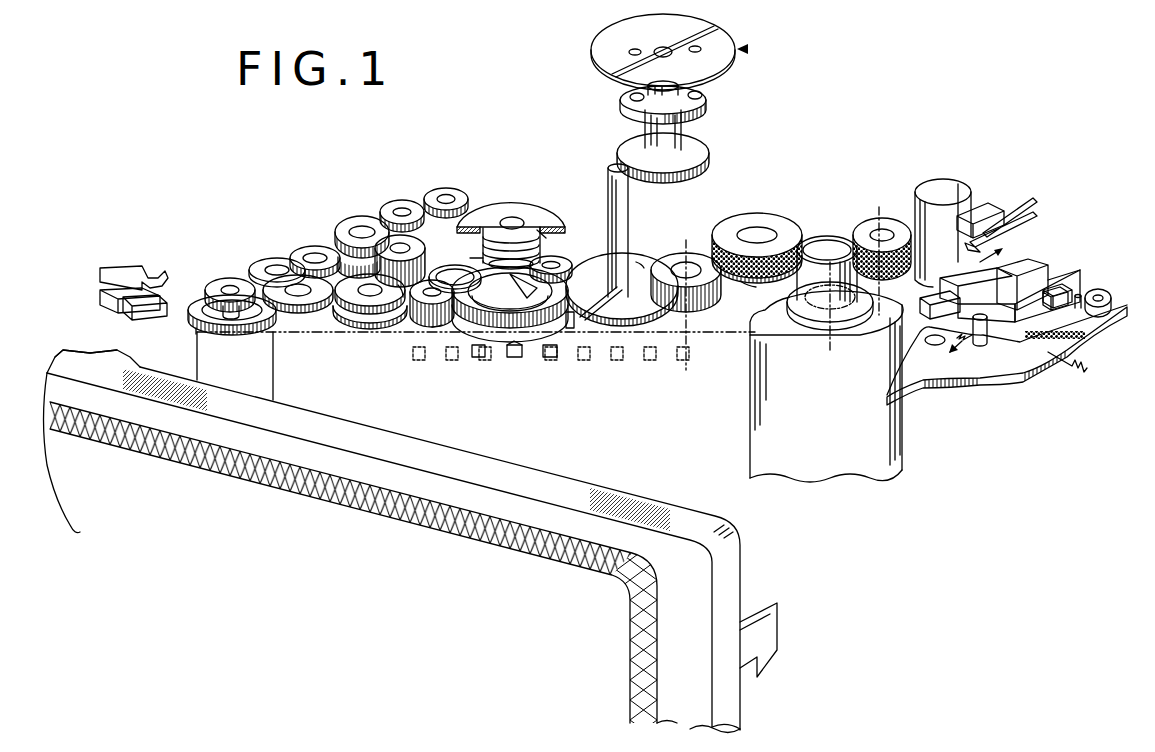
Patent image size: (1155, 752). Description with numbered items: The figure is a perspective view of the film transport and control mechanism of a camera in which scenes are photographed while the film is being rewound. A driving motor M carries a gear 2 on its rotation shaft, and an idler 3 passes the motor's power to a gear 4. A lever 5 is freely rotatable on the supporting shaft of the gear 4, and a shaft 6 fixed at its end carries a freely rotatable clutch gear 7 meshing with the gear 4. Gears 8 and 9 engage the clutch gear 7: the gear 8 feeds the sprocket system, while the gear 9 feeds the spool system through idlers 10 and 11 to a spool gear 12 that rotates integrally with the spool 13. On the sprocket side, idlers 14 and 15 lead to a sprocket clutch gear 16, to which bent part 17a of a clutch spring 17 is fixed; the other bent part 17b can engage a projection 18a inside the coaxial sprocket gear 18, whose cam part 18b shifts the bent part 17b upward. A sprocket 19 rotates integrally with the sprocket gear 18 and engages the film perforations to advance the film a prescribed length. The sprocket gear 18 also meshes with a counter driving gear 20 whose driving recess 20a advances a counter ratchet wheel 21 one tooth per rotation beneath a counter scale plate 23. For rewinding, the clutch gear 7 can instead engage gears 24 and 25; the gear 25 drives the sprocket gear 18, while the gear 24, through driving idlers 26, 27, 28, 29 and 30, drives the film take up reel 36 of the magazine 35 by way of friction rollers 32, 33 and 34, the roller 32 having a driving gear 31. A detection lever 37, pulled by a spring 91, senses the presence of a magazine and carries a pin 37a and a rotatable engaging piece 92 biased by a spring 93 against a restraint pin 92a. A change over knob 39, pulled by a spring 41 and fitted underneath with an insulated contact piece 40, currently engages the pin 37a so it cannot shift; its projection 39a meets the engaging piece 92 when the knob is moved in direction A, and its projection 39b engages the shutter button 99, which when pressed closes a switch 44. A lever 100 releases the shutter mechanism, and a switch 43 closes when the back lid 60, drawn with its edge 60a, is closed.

The gear 2 is at (222, 285).
The idler 3 is at (297, 306).
The gear 4 is at (352, 311).
The lever 5 is at (363, 328).
The shaft 6 is at (394, 300).
The clutch gear 7 is at (411, 252).
The gear 8 is at (363, 222).
The gear 9 is at (342, 255).
The idler 10 is at (312, 252).
The idler 11 is at (268, 264).
The spool gear 12 is at (255, 337).
The spool 13 is at (273, 366).
The idler 14 is at (403, 208).
The idler 15 is at (447, 195).
The sprocket clutch gear 16 is at (511, 197).
The clutch spring 17 is at (517, 240).
The bent part 17a is at (546, 238).
The bent part 17b is at (476, 256).
The sprocket gear 18 is at (480, 344).
The projection 18a is at (512, 350).
The cam part 18b is at (548, 350).
The sprocket 19 is at (569, 330).
The counter driving gear 20 is at (629, 200).
The driving recess 20a is at (612, 170).
The counter ratchet wheel 21 is at (708, 151).
The counter scale plate 23 is at (730, 39).
The gear 24 is at (413, 326).
The gear 25 is at (434, 329).
The driving idler 26 is at (455, 270).
The driving idler 27 is at (560, 257).
The driving idler 28 is at (606, 270).
The driving idler 29 is at (640, 260).
The driving idler 30 is at (688, 253).
The driving gear 31 is at (746, 288).
The friction roller 32 is at (762, 214).
The friction roller 33 is at (826, 326).
The friction roller 34 is at (884, 218).
The magazine 35 is at (816, 465).
The film take up reel 36 is at (825, 236).
The detection lever 37 is at (945, 376).
The pin 37a is at (982, 346).
The change over knob 39 is at (1030, 260).
The projection 39a is at (1060, 284).
The projection 39b is at (950, 232).
The contact piece 40 is at (1022, 350).
The spring 41 is at (958, 352).
The switch 43 is at (128, 266).
The switch 44 is at (1030, 203).
The back lid 60 is at (190, 438).
The frame edge 60a is at (103, 355).
The spring 91 is at (1084, 385).
The engaging piece 92 is at (1110, 295).
The restraint pin 92a is at (1090, 312).
The spring 93 is at (1072, 292).
The shutter button 99 is at (970, 214).
The lever 100 is at (927, 320).
The driving motor M is at (196, 331).
The arrow A is at (999, 247).